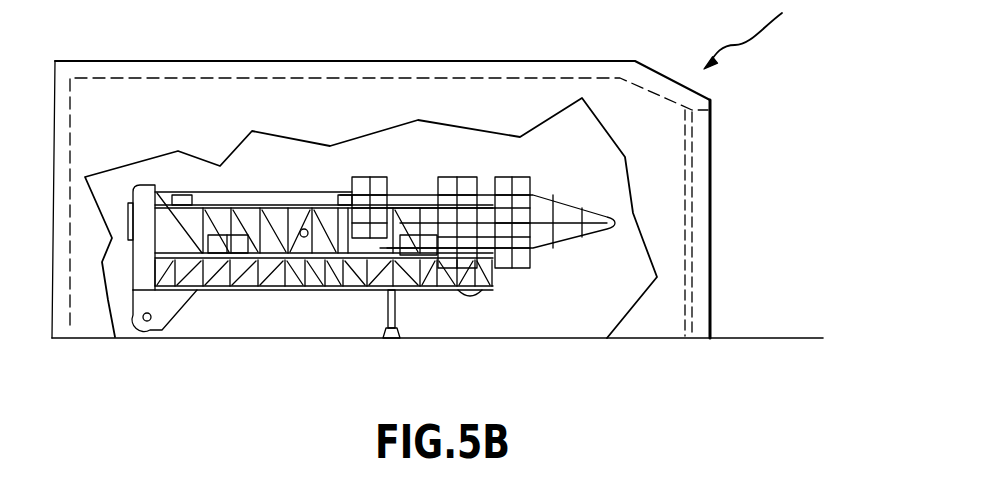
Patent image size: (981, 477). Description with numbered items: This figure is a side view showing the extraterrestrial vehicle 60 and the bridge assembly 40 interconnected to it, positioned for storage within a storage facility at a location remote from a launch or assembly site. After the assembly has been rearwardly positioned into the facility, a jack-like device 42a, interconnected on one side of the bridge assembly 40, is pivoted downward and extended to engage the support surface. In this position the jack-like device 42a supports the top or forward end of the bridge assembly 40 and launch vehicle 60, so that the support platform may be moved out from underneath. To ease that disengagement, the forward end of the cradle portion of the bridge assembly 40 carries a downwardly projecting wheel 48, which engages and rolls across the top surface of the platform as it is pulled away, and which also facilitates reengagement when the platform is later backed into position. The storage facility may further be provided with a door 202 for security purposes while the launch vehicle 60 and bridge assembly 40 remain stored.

The door 202 is at (710, 197).
The bridge assembly 40 is at (545, 270).
The extraterrestrial vehicle 60 is at (543, 208).
The jack-like device 42a is at (384, 318).
The wheel 48 is at (477, 298).